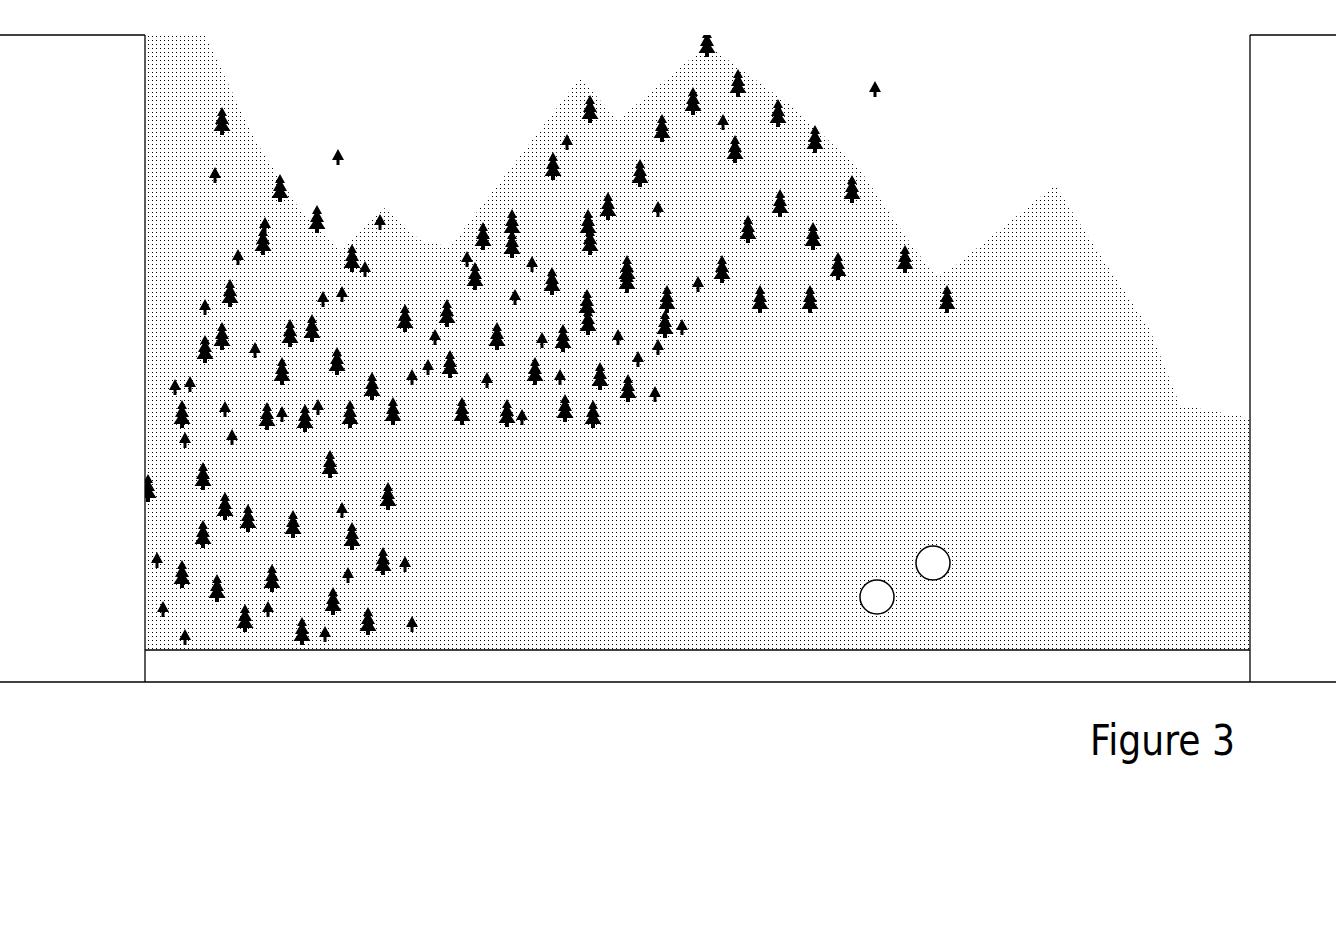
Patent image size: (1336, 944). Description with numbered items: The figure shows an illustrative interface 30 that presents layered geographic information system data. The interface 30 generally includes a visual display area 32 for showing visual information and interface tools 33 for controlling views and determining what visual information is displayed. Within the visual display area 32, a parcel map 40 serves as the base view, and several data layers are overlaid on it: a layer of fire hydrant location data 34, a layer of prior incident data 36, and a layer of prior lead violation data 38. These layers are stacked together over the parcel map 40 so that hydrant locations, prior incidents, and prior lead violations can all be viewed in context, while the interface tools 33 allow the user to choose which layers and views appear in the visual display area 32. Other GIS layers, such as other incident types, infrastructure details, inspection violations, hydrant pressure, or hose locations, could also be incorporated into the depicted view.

The interface 30 is at (516, 712).
The visual display area 32 is at (1084, 141).
The interface tools 33 is at (100, 386).
The layer of fire hydrant location data 34 is at (280, 182).
The layer of prior incident data 36 is at (562, 140).
The layer of prior lead violation data 38 is at (933, 572).
The parcel map 40 is at (907, 230).